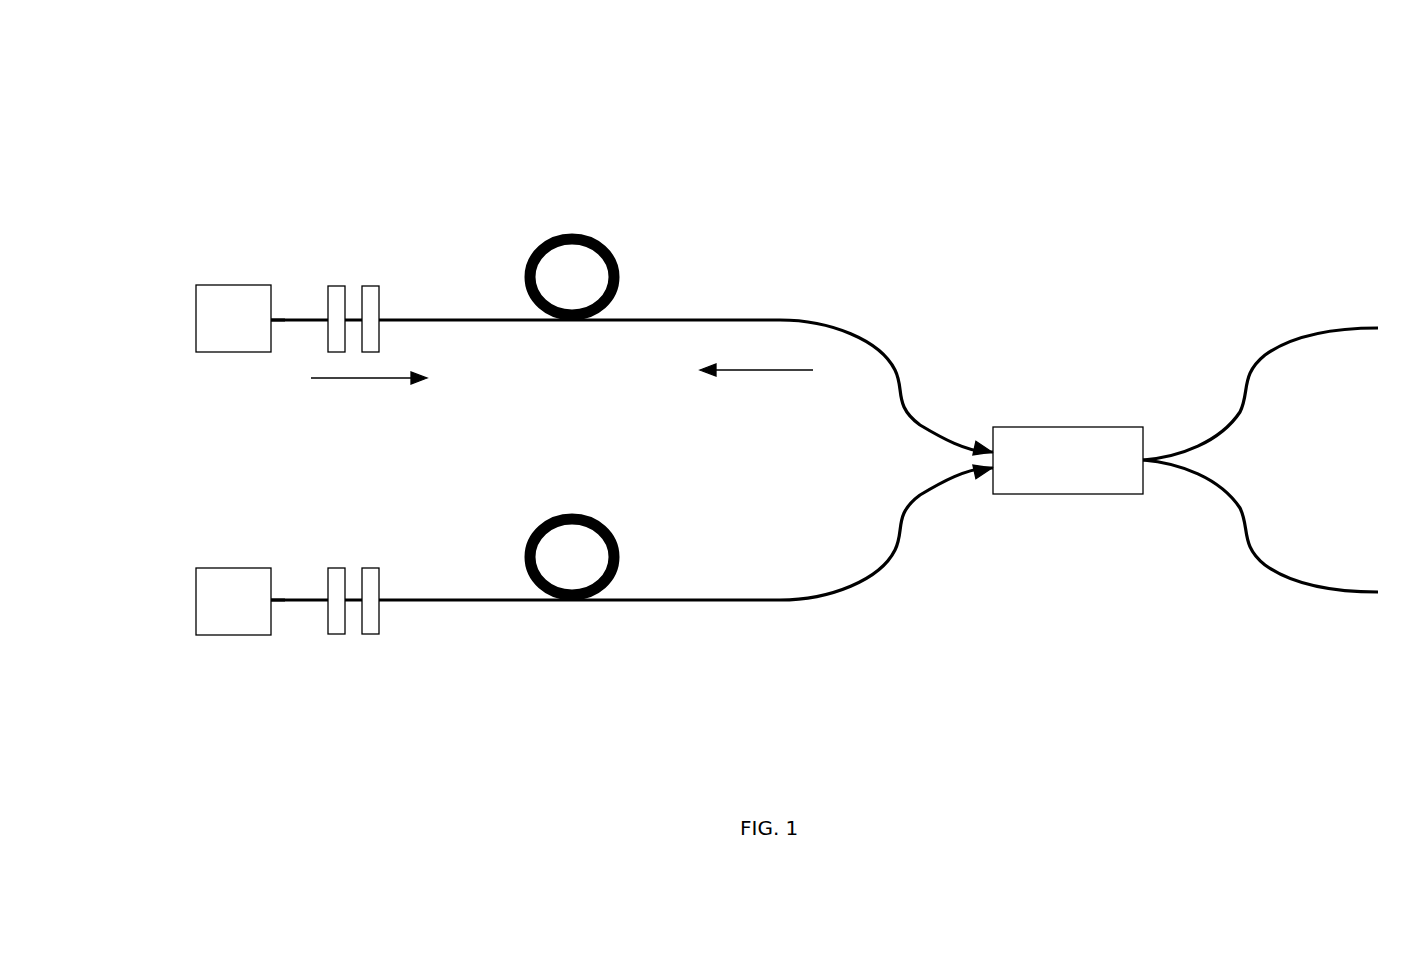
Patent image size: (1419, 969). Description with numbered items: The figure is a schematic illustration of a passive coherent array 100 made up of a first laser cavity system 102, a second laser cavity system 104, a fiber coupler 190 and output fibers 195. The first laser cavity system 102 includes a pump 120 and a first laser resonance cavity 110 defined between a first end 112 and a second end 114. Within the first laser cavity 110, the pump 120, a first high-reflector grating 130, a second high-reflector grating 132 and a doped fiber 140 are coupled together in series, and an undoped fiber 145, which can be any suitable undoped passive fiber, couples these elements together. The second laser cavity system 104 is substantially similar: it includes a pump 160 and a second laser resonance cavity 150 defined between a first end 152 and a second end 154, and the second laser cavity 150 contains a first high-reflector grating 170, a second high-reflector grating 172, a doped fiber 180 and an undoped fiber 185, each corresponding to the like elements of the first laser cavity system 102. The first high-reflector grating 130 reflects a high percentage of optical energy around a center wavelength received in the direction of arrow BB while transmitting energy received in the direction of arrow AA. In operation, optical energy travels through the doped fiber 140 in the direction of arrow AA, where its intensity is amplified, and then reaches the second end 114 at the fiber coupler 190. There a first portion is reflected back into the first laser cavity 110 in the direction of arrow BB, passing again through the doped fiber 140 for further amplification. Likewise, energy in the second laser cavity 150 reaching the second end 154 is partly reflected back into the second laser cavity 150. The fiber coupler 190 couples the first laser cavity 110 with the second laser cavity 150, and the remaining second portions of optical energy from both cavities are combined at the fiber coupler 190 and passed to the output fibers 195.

The passive coherent array 100 is at (988, 128).
The first laser cavity system 102 is at (643, 177).
The second laser cavity system 104 is at (526, 708).
The first laser resonance cavity 110 is at (460, 262).
The first end 112 is at (270, 322).
The second end 114 is at (945, 455).
The pump 120 is at (213, 328).
The first high-reflector grating 130 is at (337, 293).
The second high-reflector grating 132 is at (370, 293).
The doped fiber 140 is at (547, 320).
The undoped fiber 145 is at (293, 320).
The second laser resonance cavity 150 is at (432, 652).
The first end 152 is at (273, 598).
The second end 154 is at (945, 470).
The pump 160 is at (248, 613).
The first high-reflector grating 170 is at (337, 577).
The second high-reflector grating 172 is at (370, 572).
The doped fiber 180 is at (615, 577).
The undoped fiber 185 is at (293, 603).
The fiber coupler 190 is at (1088, 442).
The output fibers 195 is at (1283, 342).